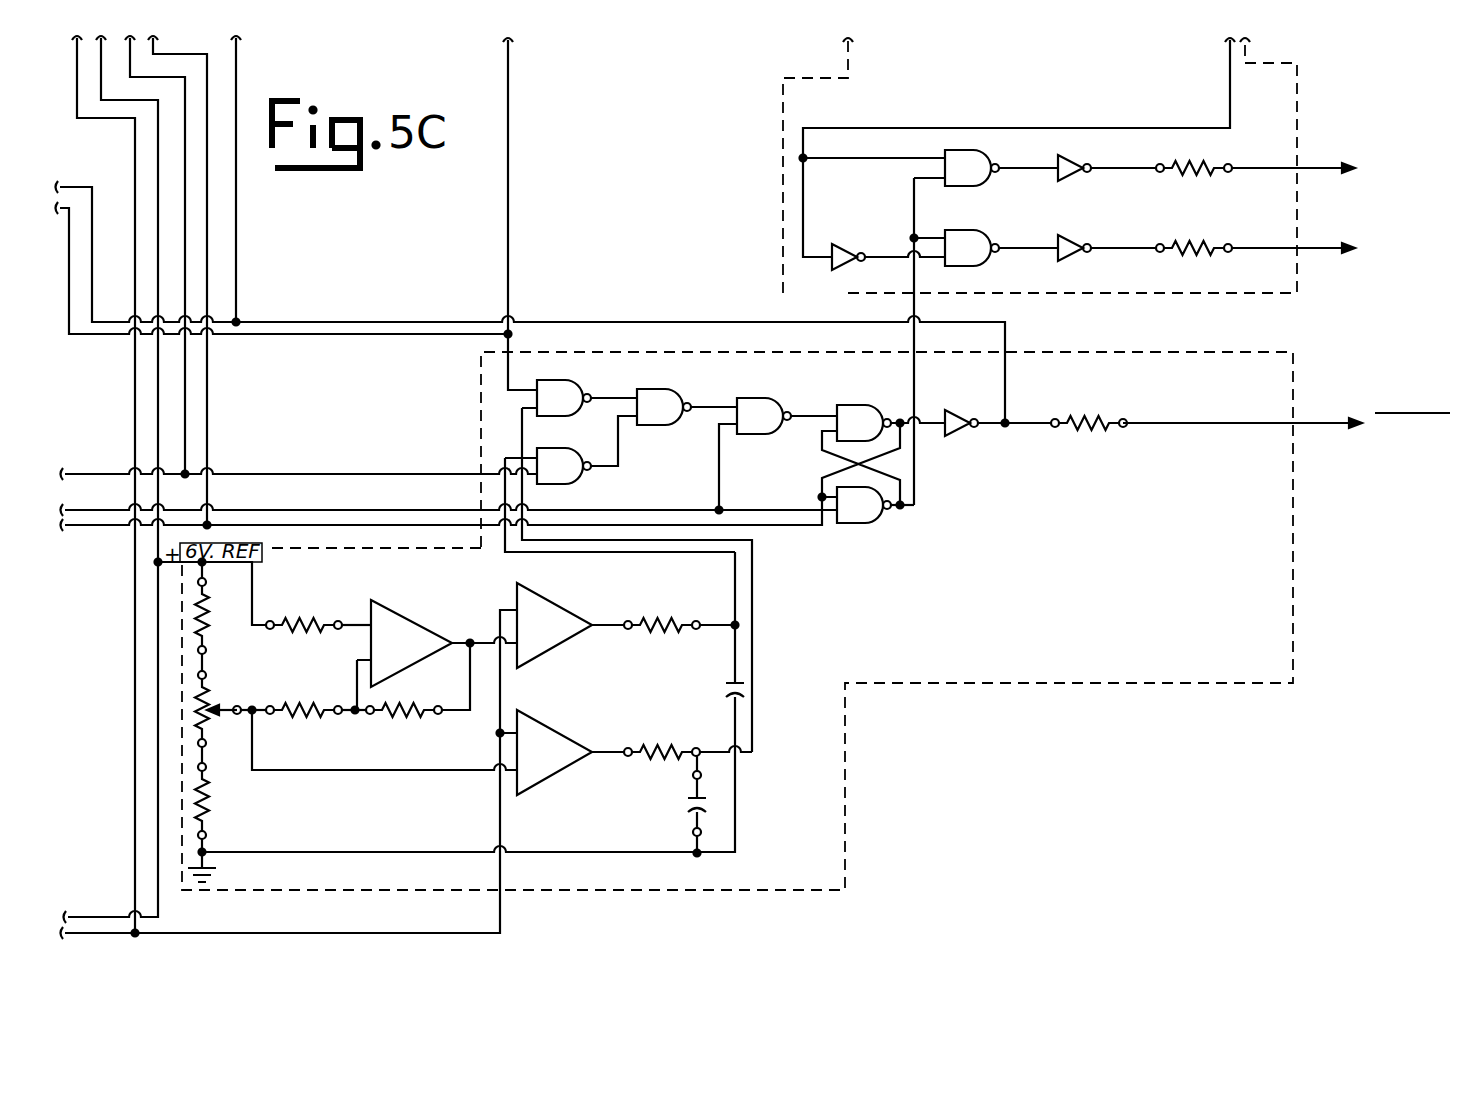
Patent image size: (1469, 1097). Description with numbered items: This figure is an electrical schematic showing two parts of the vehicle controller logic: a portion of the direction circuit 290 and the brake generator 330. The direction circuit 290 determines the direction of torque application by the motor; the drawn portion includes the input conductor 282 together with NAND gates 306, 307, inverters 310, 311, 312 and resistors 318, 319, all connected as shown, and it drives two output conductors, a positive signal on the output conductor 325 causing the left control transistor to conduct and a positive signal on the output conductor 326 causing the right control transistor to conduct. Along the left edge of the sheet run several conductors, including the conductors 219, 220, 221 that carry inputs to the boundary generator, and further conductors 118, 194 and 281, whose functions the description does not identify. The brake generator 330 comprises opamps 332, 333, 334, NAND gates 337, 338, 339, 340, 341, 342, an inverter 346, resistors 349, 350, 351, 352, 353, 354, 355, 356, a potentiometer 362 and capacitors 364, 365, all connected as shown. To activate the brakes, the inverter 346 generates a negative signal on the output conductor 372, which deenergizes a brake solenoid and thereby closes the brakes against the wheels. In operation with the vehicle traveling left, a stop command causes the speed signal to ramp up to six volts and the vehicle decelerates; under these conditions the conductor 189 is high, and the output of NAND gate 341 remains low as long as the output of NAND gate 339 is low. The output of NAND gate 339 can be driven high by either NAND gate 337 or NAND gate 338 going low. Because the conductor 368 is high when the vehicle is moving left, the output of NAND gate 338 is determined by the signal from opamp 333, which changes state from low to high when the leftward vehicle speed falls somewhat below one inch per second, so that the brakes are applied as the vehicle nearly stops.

The conductor line 118 is at (118, 115).
The conductor line 194 is at (101, 88).
The conductor 219 is at (136, 66).
The conductor 220 is at (156, 50).
The conductor 221 is at (238, 60).
The input conductor 282 is at (511, 66).
The conductor line 281 is at (1228, 64).
The direction circuit 290 is at (1300, 128).
The NAND gate 306 is at (978, 152).
The NAND gate 307 is at (978, 232).
The inverter 310 is at (845, 250).
The inverter 311 is at (1068, 155).
The inverter 312 is at (1068, 235).
The resistor 318 is at (1195, 178).
The resistor 319 is at (1205, 232).
The output conductor 325 is at (1315, 165).
The output conductor 326 is at (1312, 246).
The brake generator 330 is at (860, 813).
The opamp 332 is at (416, 620).
The opamp 333 is at (560, 608).
The opamp 334 is at (558, 722).
The NAND gate 337 is at (562, 380).
The NAND gate 338 is at (557, 448).
The NAND gate 339 is at (655, 432).
The NAND gate 340 is at (760, 398).
The NAND gate 341 is at (853, 405).
The NAND gate 342 is at (865, 523).
The inverter 346 is at (950, 410).
The resistor 349 is at (205, 618).
The resistor 350 is at (210, 808).
The resistor 351 is at (305, 618).
The resistor 352 is at (306, 716).
The resistor 353 is at (402, 716).
The resistor 354 is at (678, 640).
The resistor 355 is at (670, 745).
The resistor 356 is at (1100, 416).
The potentiometer 362 is at (212, 698).
The capacitor 364 is at (690, 803).
The capacitor 365 is at (728, 684).
The conductor 368 is at (102, 472).
The conductor 189 is at (114, 510).
The output conductor 372 is at (1355, 420).